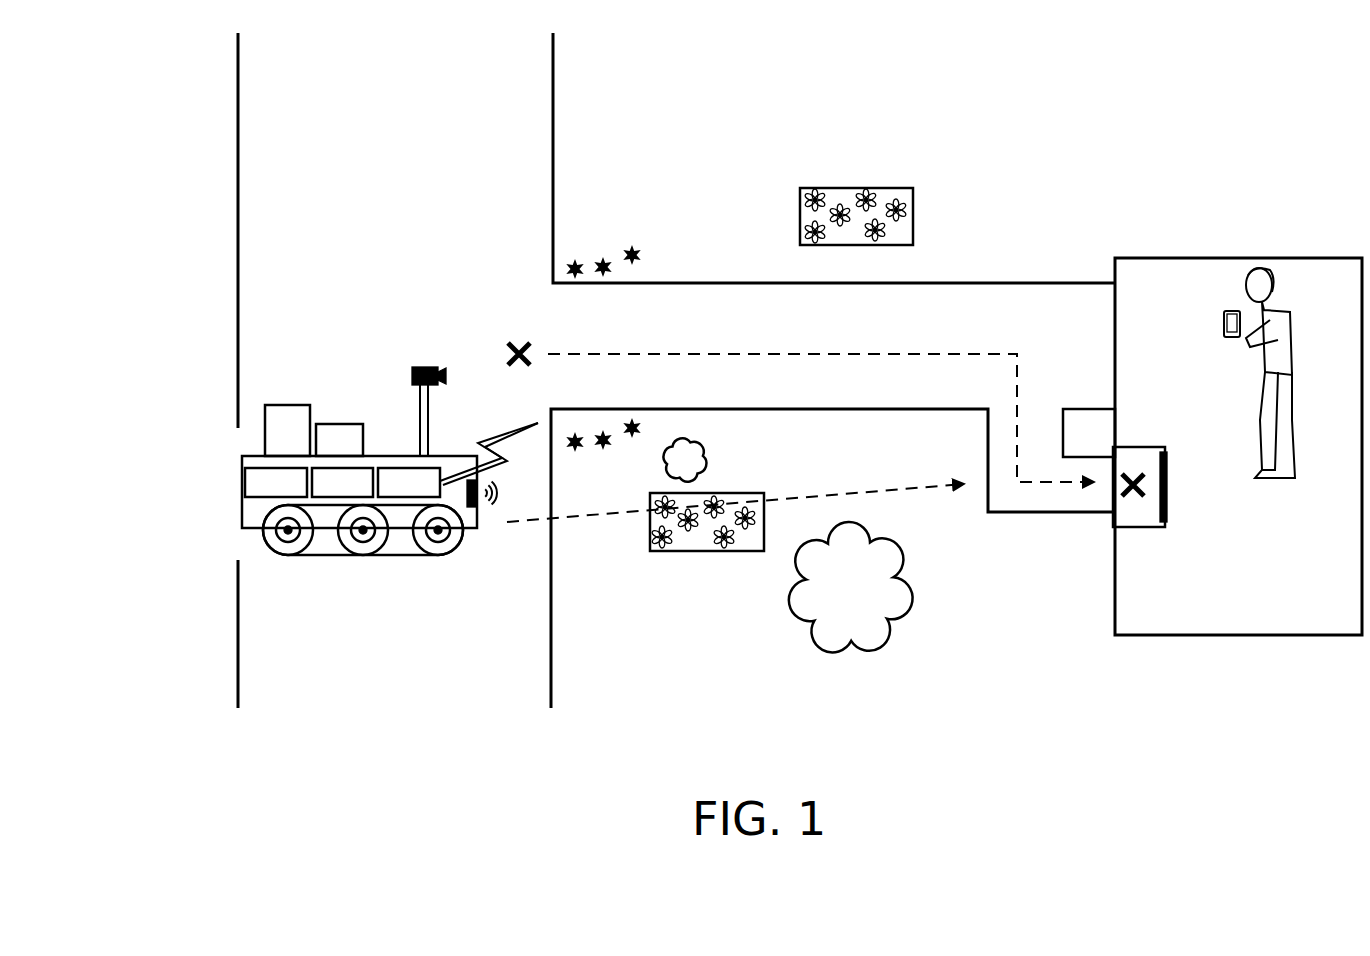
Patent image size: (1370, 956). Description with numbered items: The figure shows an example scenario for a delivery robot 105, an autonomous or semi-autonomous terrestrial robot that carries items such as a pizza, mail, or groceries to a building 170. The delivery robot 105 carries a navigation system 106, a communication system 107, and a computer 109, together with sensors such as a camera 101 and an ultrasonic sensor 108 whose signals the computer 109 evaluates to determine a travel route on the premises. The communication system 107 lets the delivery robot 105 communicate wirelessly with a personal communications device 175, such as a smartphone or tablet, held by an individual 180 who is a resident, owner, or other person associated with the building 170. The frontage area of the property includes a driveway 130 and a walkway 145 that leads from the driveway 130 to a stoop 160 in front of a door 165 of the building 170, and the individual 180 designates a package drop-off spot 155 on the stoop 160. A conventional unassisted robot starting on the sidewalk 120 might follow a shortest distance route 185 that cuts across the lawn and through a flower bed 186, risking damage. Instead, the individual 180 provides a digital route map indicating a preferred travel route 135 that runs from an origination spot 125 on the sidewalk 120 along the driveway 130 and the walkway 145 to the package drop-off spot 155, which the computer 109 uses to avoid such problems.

The camera 101 is at (406, 369).
The delivery robot 105 is at (332, 462).
The navigation system 106 is at (342, 482).
The communication system 107 is at (409, 482).
The ultrasonic sensor 108 is at (484, 510).
The computer 109 is at (276, 482).
The sidewalk 120 is at (325, 370).
The origination spot 125 is at (520, 337).
The driveway 130 is at (834, 180).
The travel route 135 is at (808, 352).
The walkway 145 is at (1069, 433).
The package drop-off spot 155 is at (1139, 468).
The stoop 160 is at (1163, 489).
The door 165 is at (1192, 472).
The building 170 is at (1238, 446).
The personal communications device 175 is at (1222, 316).
The individual 180 is at (1269, 373).
The shortest distance route 185 is at (814, 492).
The flower bed 186 is at (689, 551).